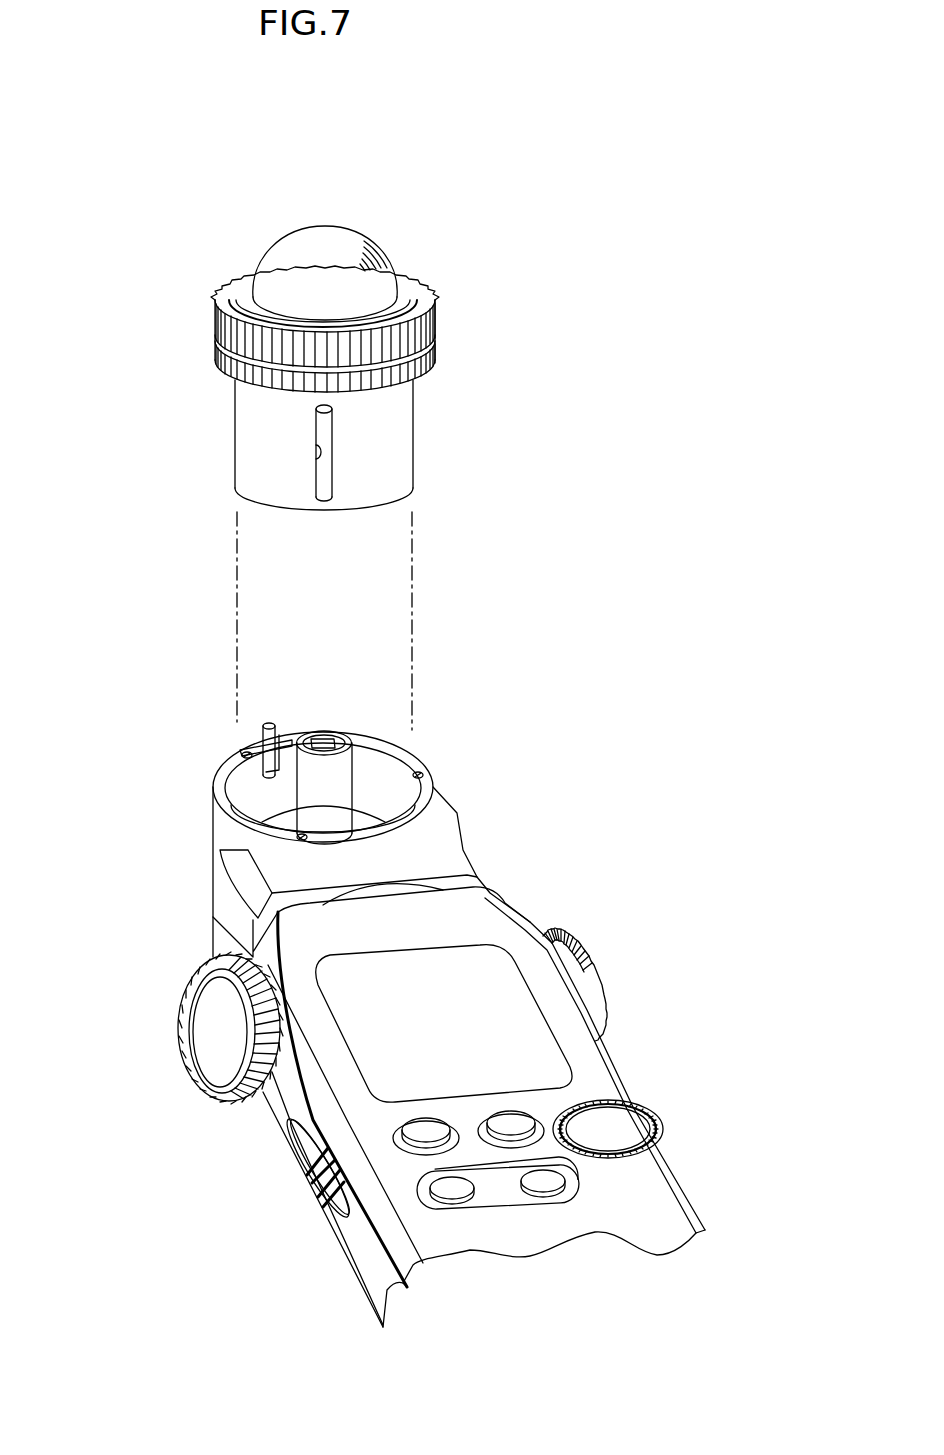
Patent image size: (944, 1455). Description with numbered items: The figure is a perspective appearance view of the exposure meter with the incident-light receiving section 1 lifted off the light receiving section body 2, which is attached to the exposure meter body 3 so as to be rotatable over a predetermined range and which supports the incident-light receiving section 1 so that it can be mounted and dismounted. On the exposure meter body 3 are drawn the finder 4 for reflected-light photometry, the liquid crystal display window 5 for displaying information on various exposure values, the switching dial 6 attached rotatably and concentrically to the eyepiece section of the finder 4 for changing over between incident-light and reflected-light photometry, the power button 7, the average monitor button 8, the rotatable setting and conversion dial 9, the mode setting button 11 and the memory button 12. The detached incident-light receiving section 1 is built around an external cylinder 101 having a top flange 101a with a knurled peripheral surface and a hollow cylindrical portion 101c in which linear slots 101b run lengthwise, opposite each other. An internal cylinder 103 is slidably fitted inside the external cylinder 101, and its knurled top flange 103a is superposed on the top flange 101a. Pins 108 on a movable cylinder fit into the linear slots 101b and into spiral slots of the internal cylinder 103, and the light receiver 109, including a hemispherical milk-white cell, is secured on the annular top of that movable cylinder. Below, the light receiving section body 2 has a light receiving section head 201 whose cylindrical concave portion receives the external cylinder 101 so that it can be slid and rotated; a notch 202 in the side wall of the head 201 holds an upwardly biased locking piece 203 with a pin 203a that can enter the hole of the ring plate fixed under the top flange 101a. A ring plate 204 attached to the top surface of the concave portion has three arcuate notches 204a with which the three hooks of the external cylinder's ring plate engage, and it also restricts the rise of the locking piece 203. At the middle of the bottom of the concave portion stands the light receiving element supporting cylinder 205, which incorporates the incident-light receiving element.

The incident-light receiving section 1 is at (445, 228).
The light receiving section body 2 is at (506, 812).
The exposure meter body 3 is at (629, 1046).
The finder 4 is at (208, 1025).
The liquid crystal display window 5 is at (493, 977).
The switching dial 6 is at (580, 972).
The power button 7 is at (420, 1126).
The average monitor button 8 is at (512, 1117).
The setting and conversion dial 9 is at (626, 1130).
The mode setting button 11 is at (452, 1187).
The memory button 12 is at (305, 1145).
The external cylinder 101 is at (435, 347).
The top flange 101a is at (217, 357).
The linear slots 101b is at (318, 458).
The hollow cylindrical portion 101c is at (390, 467).
The internal cylinder 103 is at (227, 287).
The top flange 103a is at (217, 335).
The pins 108 is at (318, 413).
The light receiver 109 is at (320, 247).
The light receiving section head 201 is at (220, 905).
The notch 202 is at (230, 763).
The locking piece 203 is at (258, 778).
The pin 203a is at (282, 742).
The ring plate 204 is at (327, 790).
The arcuate notches 204a is at (240, 812).
The light receiving element supporting cylinder 205 is at (425, 787).